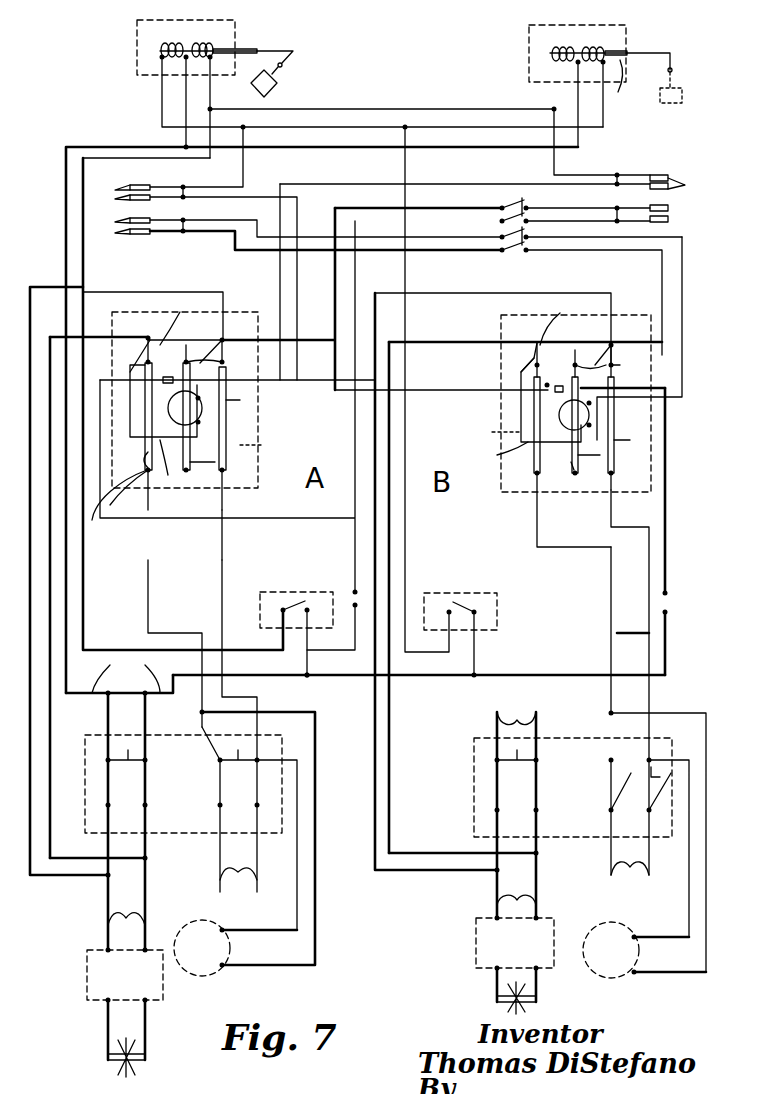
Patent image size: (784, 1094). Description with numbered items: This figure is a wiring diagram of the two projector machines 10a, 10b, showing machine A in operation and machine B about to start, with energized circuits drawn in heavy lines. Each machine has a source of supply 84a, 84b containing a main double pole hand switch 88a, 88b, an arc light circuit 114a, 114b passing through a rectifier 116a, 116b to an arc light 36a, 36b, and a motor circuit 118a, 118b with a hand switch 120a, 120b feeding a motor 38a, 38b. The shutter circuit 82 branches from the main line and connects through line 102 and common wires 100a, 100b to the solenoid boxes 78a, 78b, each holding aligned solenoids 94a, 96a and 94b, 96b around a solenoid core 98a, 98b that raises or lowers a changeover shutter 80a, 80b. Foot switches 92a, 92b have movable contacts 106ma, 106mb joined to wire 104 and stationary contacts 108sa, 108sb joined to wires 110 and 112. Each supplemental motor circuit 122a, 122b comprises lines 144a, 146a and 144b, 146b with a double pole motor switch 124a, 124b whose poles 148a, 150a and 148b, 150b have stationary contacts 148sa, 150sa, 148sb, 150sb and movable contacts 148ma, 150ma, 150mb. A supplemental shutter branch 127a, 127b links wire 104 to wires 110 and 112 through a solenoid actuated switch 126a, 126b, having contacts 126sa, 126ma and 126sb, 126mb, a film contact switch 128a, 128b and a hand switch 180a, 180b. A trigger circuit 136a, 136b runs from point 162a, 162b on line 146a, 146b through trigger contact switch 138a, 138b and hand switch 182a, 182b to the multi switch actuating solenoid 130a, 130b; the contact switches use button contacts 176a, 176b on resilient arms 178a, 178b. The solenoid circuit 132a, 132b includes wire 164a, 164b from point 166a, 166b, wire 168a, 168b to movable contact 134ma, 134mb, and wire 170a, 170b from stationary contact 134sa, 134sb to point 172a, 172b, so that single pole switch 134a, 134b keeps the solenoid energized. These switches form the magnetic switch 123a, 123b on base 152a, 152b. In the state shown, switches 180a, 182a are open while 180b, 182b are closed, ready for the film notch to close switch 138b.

The solenoid box 78a is at (235, 22).
The solenoid box 78b is at (620, 27).
The solenoid 94a is at (162, 47).
The solenoid 94b is at (552, 50).
The solenoid 96a is at (213, 48).
The solenoid 96b is at (604, 50).
The solenoid core 98a is at (240, 48).
The solenoid core 98b is at (605, 104).
The common wire 100a is at (186, 92).
The common wire 100b is at (603, 110).
The changeover shutter 80a is at (277, 83).
The changeover shutter 80b is at (682, 96).
The wire 110 is at (395, 109).
The wire 112 is at (440, 127).
The line of solenoid circuit 102 is at (66, 200).
The wire of changeover circuit 104 is at (350, 678).
The contact switch 128a is at (655, 176).
The contact switch 128b is at (138, 186).
The button contacts 176a is at (685, 185).
The button contacts 176b is at (130, 197).
The resilient arms 178a is at (625, 165).
The resilient arms 178b is at (180, 190).
The trigger contact switch 138a is at (668, 220).
The trigger contact switch 138b is at (138, 236).
The supplemental shutter branch 127a is at (553, 176).
The supplemental shutter branch 127b is at (248, 192).
The trigger circuit 136a is at (452, 210).
The trigger circuit 136b is at (470, 252).
The hand switch 182a is at (522, 204).
The hand switch 182b is at (522, 238).
The projector machine 10a is at (335, 462).
The projector machine 10b is at (692, 400).
The wire 170a is at (228, 318).
The wire 170b is at (615, 312).
The wire 164a is at (135, 365).
The wire 164b is at (522, 370).
The connection point 166a is at (175, 319).
The connection point 166b is at (564, 322).
The connection point 162a is at (224, 345).
The connection point 162b is at (613, 345).
The stationary contact 126sa is at (145, 365).
The stationary contact 126sb is at (545, 383).
The movable contact 126ma is at (186, 360).
The movable contact 126mb is at (575, 363).
The solenoid actuated switch 126a is at (160, 382).
The solenoid actuated switch 126b is at (548, 390).
The stationary contact 148sa is at (149, 340).
The stationary contact 148sb is at (538, 363).
The stationary contact 150sa is at (223, 343).
The stationary contact 150sb is at (613, 363).
The stationary contact 134sa is at (224, 363).
The stationary contact 134sb is at (614, 374).
The connection point 172a is at (285, 340).
The connection point 172b is at (682, 340).
The multi switch actuating solenoid 130a is at (200, 398).
The multi switch actuating solenoid 130b is at (592, 403).
The movable contact 150ma is at (240, 400).
The movable contact 150mb is at (630, 440).
The solenoid actuated motor switch 124a is at (200, 422).
The solenoid actuated motor switch 124b is at (592, 425).
The magnetic switch 123a is at (315, 437).
The magnetic switch 123b is at (692, 372).
The base 152a is at (268, 443).
The base 152b is at (487, 430).
The movable contact 134ma is at (215, 462).
The movable contact 134mb is at (600, 455).
The solenoid actuated single pole switch 134a is at (150, 466).
The solenoid actuated single pole switch 134b is at (558, 461).
The switch pole 150a is at (226, 470).
The switch pole 150b is at (614, 473).
The supplemental solenoid circuit 132a is at (175, 464).
The supplemental solenoid circuit 132b is at (494, 451).
The switch pole 148a is at (148, 472).
The switch pole 148b is at (535, 475).
The wire 168a is at (224, 500).
The wire 168b is at (612, 480).
The movable contact 148ma is at (119, 501).
The line of supplemental motor circuit 144a is at (148, 575).
The line of supplemental motor circuit 144b is at (390, 530).
The line of supplemental motor circuit 146a is at (222, 560).
The line of supplemental motor circuit 146b is at (386, 560).
The supplemental motor circuit 122a is at (218, 600).
The supplemental motor circuit 122b is at (617, 633).
The stationary contact 108sa is at (288, 598).
The stationary contact 108sb is at (454, 600).
The foot switch 92a is at (290, 597).
The foot switch 92b is at (455, 596).
The movable contact 106ma is at (354, 606).
The movable contact 106mb is at (462, 603).
The hand switch 180a is at (307, 625).
The hand switch 180b is at (668, 605).
The shutter circuit 82 is at (119, 674).
The source of supply 84a is at (108, 693).
The source of supply 84b is at (516, 808).
The main double pole hand switch 88a is at (145, 783).
The main double pole hand switch 88b is at (536, 788).
The double pole hand switch 120a is at (219, 772).
The double pole hand switch 120b is at (630, 790).
The motor circuit 118a is at (238, 826).
The motor circuit 118b is at (630, 817).
The arc light circuit 114a is at (126, 908).
The arc light circuit 114b is at (516, 891).
The rectifier 116a is at (87, 980).
The rectifier 116b is at (476, 952).
The arc light 36a is at (128, 1062).
The arc light 36b is at (530, 1000).
The motor 38a is at (213, 975).
The motor 38b is at (610, 980).